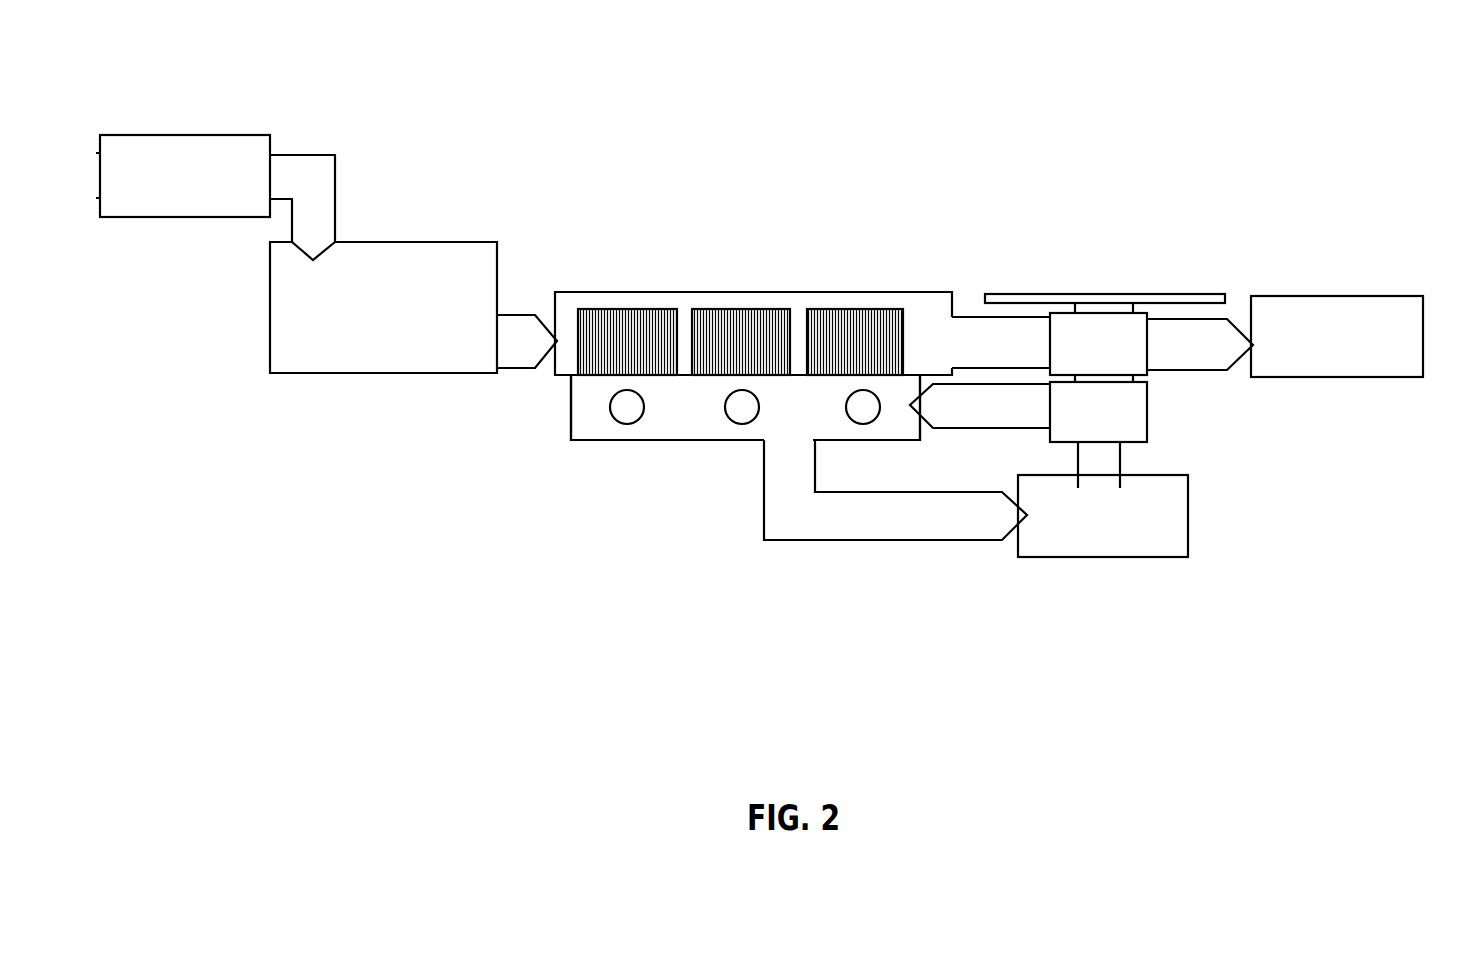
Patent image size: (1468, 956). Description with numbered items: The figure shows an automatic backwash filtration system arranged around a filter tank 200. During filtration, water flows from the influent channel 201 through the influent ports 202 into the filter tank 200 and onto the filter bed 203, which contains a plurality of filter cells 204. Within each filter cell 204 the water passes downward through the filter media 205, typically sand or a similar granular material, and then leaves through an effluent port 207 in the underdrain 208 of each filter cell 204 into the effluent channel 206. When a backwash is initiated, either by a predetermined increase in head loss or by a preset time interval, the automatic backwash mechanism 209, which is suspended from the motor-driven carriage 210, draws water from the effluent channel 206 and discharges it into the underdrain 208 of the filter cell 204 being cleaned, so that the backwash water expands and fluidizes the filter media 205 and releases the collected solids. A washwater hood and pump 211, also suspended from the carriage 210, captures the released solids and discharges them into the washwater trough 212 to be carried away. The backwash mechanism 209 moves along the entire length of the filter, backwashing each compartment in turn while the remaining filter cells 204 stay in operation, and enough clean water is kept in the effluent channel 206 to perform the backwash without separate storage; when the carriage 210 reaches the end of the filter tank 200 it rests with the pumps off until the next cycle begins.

The filter tank 200 is at (408, 277).
The influent channel 201 is at (205, 160).
The influent ports 202 is at (530, 342).
The filter bed 203 is at (595, 292).
The filter cells 204 is at (710, 309).
The filter media 205 is at (840, 325).
The effluent channel 206 is at (1083, 525).
The effluent port 207 is at (740, 408).
The underdrain 208 is at (590, 443).
The automatic backwash mechanism 209 is at (1115, 408).
The motor-driven carriage 210 is at (1002, 293).
The washwater hood and pump 211 is at (1115, 343).
The washwater trough 212 is at (1313, 328).